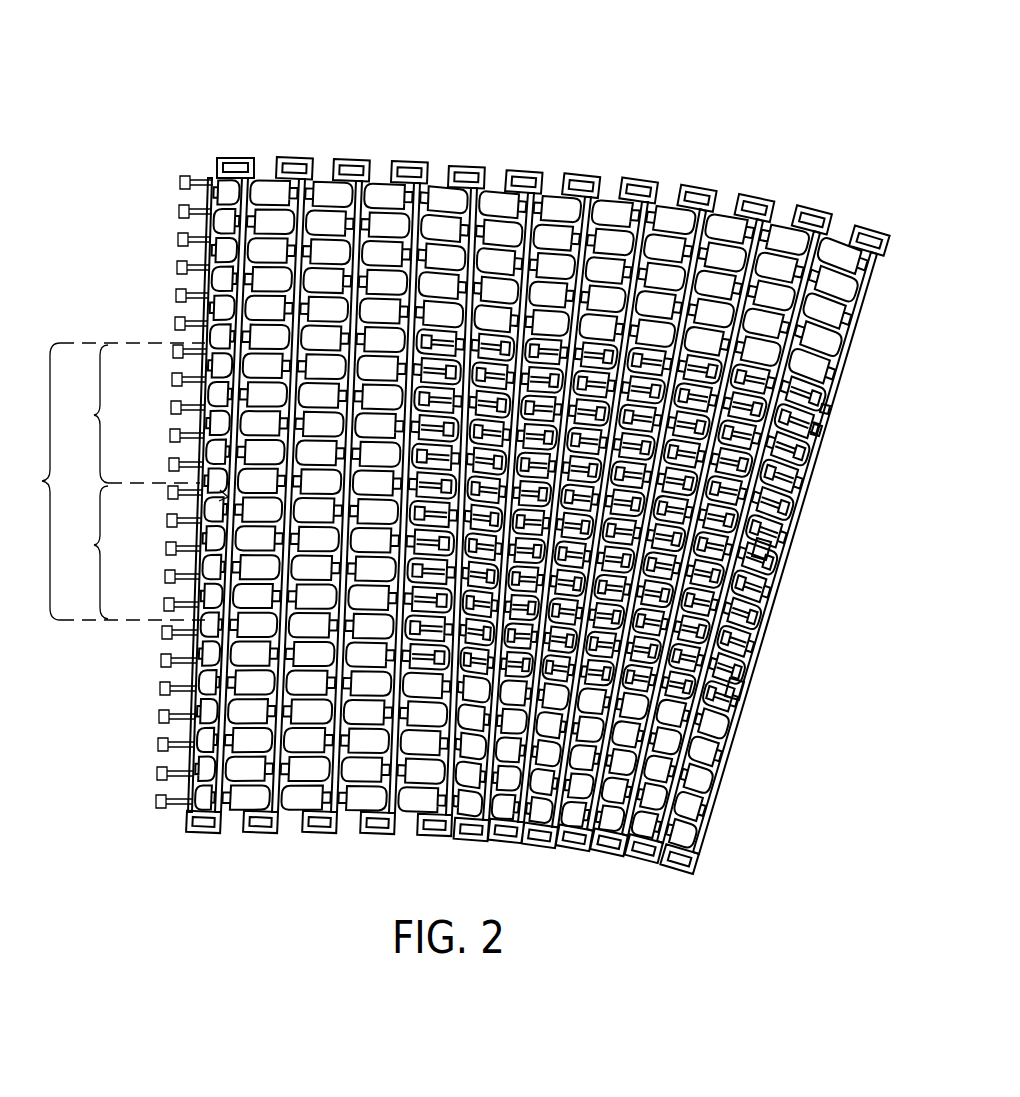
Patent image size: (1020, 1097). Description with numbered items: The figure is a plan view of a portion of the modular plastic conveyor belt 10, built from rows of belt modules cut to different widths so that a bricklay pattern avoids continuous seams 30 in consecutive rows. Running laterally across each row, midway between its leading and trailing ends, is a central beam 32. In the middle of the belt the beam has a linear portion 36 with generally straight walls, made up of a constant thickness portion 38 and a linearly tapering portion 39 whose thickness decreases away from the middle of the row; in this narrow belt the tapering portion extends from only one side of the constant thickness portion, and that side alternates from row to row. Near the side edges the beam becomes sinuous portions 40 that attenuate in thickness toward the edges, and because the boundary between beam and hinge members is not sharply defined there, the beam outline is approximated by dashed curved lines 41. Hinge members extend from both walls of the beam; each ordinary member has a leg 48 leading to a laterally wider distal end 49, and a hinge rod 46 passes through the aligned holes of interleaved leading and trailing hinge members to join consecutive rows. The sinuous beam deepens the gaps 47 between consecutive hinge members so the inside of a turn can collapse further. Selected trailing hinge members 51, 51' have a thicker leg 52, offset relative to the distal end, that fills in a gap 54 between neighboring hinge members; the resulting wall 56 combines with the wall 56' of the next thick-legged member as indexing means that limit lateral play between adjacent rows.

The conveyor belt 10 is at (608, 67).
The seams 30 is at (743, 688).
The central beam 32 is at (770, 548).
The linear portion 36 is at (44, 480).
The constant thickness portion 38 is at (103, 415).
The linearly tapering portion 39 is at (103, 546).
The sinuous portions 40 is at (165, 698).
The dashed curved lines 41 is at (168, 757).
The hinge rod 46 is at (858, 309).
The gaps 47 is at (222, 182).
The leg 48 is at (822, 428).
The distal end 49 is at (832, 408).
The selected hinge member 51 is at (171, 384).
The selected hinge member 51' is at (168, 434).
The thicker leg 52 is at (192, 450).
The gap 54 is at (215, 501).
The wall 56 is at (183, 530).
The wall 56' is at (182, 562).